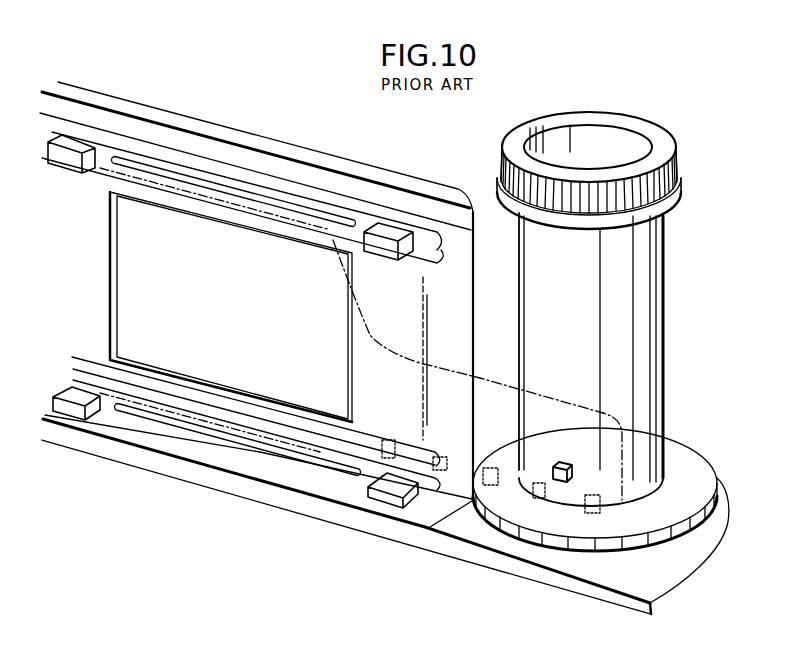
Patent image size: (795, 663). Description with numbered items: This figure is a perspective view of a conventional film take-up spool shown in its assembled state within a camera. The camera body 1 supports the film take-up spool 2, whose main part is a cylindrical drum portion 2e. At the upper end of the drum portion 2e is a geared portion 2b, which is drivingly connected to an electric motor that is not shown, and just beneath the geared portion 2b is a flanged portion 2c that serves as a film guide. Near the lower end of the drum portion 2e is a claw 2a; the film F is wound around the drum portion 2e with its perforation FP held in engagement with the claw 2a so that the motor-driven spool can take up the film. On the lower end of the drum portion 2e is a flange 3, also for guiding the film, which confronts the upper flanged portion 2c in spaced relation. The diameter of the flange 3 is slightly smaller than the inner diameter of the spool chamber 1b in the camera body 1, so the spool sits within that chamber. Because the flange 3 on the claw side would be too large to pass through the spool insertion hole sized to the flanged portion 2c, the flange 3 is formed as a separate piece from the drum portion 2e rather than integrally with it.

The camera body 1 is at (287, 160).
The spool chamber 1b is at (707, 537).
The film take-up spool 2 is at (617, 309).
The claw 2a is at (567, 466).
The geared portion 2b is at (668, 167).
The flanged portion 2c is at (675, 190).
The drum portion 2e is at (652, 277).
The flange 3 is at (692, 470).
The film F is at (484, 437).
The perforation FP is at (543, 498).